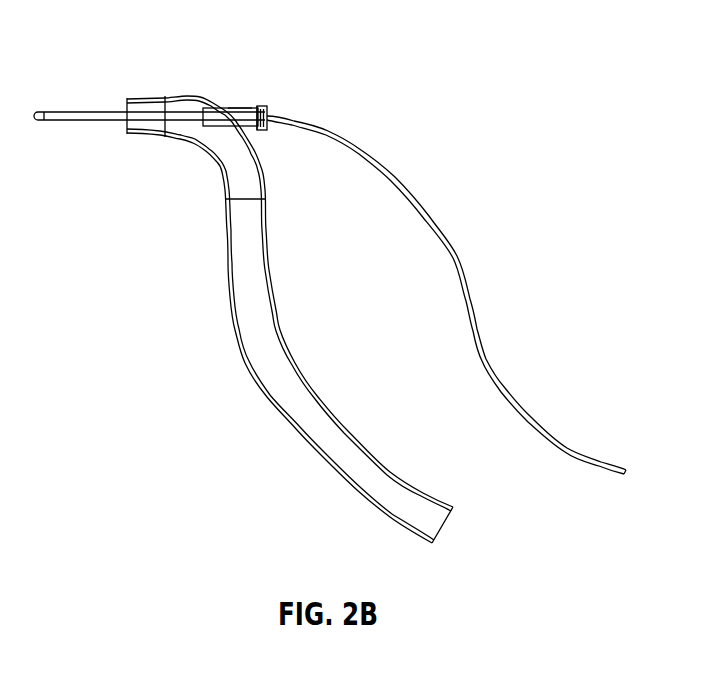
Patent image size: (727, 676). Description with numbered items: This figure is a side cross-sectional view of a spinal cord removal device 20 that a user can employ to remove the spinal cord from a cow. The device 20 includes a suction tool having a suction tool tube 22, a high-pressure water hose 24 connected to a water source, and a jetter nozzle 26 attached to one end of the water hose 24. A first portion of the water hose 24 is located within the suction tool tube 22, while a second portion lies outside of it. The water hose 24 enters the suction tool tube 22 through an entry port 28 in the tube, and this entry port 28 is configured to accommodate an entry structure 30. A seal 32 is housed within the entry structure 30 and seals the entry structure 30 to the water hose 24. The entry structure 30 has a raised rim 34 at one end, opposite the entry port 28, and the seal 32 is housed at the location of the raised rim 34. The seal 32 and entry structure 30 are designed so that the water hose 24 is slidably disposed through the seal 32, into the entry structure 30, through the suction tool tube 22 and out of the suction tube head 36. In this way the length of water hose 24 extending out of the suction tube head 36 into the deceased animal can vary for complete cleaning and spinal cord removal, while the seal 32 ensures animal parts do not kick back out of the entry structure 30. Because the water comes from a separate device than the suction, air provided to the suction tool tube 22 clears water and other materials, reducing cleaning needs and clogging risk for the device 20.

The device 20 is at (460, 75).
The suction tool tube 22 is at (365, 472).
The water hose 24 is at (348, 138).
The jetter nozzle 26 is at (38, 125).
The entry port 28 is at (215, 110).
The entry structure 30 is at (240, 110).
The seal 32 is at (266, 105).
The raised rim 34 is at (257, 108).
The suction tube head 36 is at (147, 107).